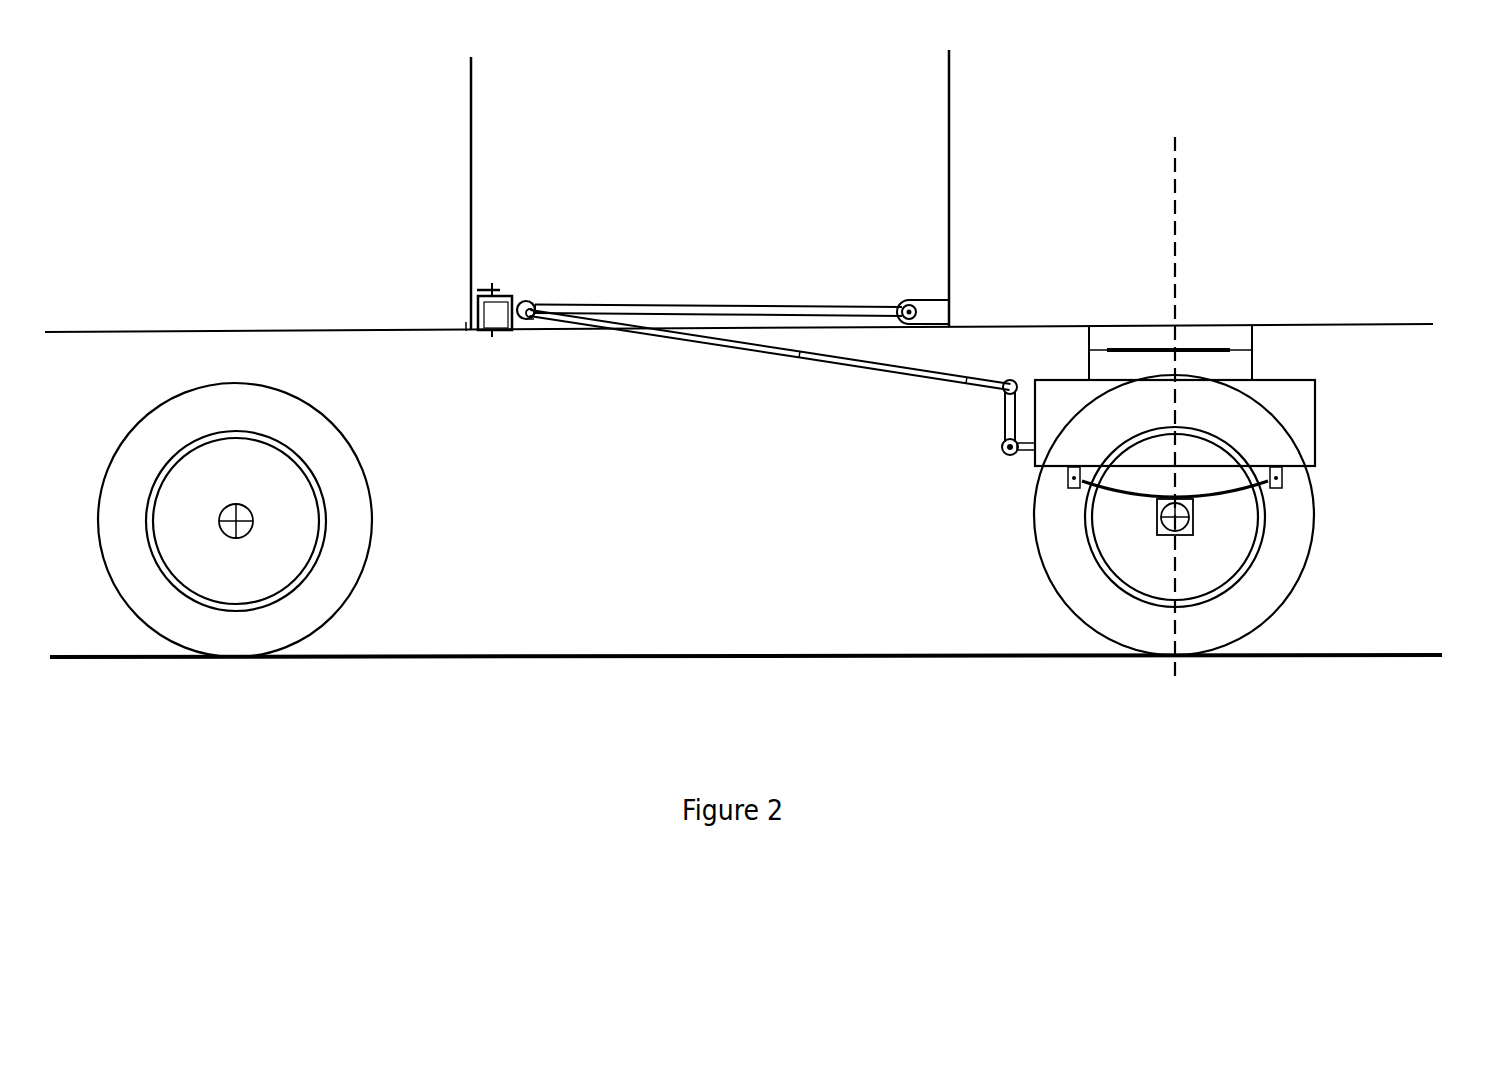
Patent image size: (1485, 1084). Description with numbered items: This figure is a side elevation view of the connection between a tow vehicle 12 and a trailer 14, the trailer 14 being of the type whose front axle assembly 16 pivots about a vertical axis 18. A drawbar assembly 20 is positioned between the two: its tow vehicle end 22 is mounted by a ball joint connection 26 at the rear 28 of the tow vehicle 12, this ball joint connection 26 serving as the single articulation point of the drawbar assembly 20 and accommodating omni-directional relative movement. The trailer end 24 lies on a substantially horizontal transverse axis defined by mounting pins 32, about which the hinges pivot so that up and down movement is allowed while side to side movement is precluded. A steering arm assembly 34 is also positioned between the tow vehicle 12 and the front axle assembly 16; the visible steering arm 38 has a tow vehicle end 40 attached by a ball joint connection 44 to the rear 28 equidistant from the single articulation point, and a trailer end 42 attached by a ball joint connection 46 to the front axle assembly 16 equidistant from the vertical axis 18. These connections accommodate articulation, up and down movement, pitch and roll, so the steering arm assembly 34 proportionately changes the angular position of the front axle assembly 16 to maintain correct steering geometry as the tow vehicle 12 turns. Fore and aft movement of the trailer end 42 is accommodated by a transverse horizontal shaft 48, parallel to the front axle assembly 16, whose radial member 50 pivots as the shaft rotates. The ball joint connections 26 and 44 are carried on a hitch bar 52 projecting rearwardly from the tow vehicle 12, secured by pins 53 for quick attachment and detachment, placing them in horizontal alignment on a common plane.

The tow vehicle 12 is at (457, 135).
The trailer 14 is at (967, 140).
The front axle assembly 16 is at (1193, 514).
The vertical axis 18 is at (1177, 216).
The drawbar assembly 20 is at (742, 268).
The tow vehicle end 22 is at (577, 308).
The trailer end 24 is at (875, 310).
The ball joint connection 26 is at (530, 302).
The rear 28 is at (458, 321).
The mounting pins 32 is at (909, 305).
The steering arm assembly 34 is at (770, 380).
The steering arm 38 is at (798, 353).
The tow vehicle end 40 is at (570, 318).
The trailer end 42 is at (960, 387).
The ball joint connection 44 is at (529, 318).
The ball joint connection 46 is at (1012, 382).
The transverse horizontal shaft 48 is at (1008, 453).
The radial member 50 is at (1008, 420).
The hitch bar 52 is at (502, 312).
The pins 53 is at (487, 293).